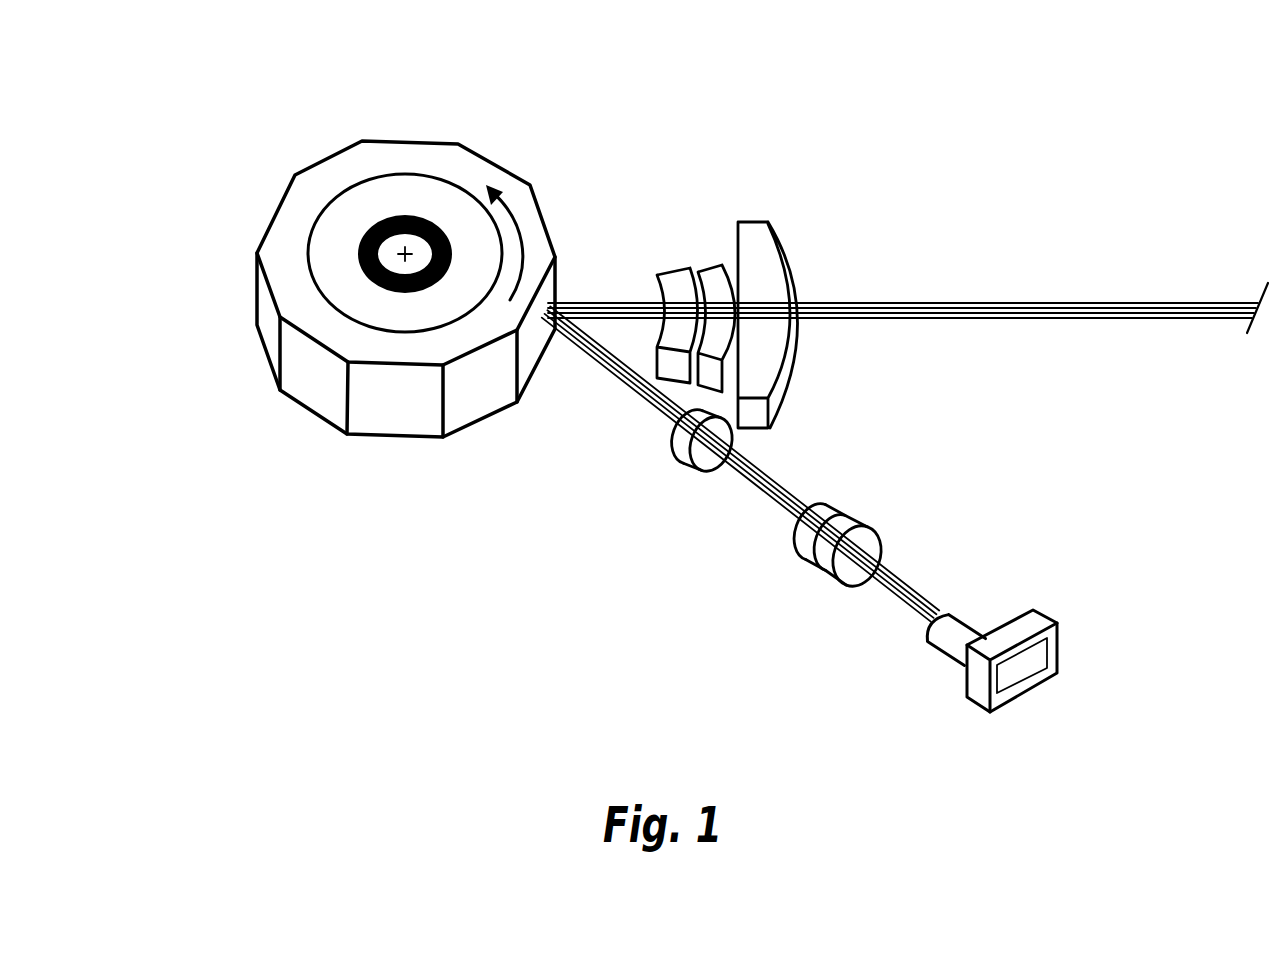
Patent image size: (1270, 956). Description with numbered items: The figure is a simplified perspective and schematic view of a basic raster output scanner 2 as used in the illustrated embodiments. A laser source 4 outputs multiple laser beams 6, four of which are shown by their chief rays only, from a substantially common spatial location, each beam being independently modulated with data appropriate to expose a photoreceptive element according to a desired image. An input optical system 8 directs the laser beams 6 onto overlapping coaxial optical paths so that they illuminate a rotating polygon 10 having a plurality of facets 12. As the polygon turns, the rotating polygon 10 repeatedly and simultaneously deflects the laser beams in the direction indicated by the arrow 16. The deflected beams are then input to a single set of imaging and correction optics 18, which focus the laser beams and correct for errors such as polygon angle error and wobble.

The raster output scanner 2 is at (232, 98).
The laser source 4 is at (1049, 606).
The laser beams 6 is at (921, 584).
The input optical system 8 is at (812, 578).
The rotating polygon 10 is at (429, 118).
The facets 12 is at (405, 410).
The arrow 16 is at (1062, 302).
The imaging and correction optics 18 is at (691, 255).